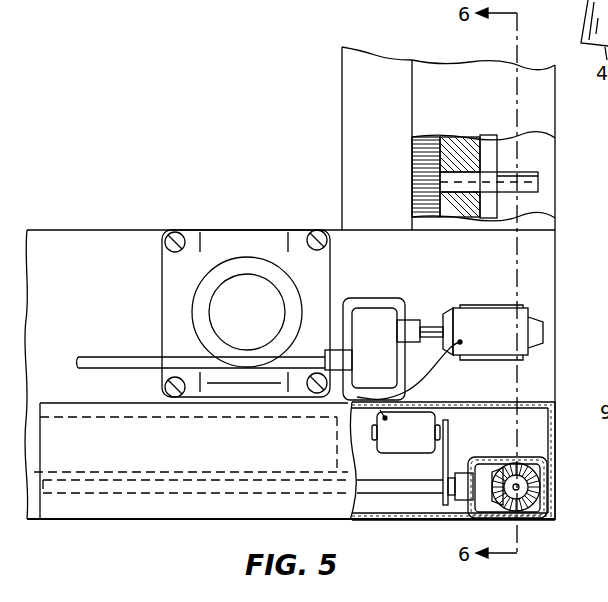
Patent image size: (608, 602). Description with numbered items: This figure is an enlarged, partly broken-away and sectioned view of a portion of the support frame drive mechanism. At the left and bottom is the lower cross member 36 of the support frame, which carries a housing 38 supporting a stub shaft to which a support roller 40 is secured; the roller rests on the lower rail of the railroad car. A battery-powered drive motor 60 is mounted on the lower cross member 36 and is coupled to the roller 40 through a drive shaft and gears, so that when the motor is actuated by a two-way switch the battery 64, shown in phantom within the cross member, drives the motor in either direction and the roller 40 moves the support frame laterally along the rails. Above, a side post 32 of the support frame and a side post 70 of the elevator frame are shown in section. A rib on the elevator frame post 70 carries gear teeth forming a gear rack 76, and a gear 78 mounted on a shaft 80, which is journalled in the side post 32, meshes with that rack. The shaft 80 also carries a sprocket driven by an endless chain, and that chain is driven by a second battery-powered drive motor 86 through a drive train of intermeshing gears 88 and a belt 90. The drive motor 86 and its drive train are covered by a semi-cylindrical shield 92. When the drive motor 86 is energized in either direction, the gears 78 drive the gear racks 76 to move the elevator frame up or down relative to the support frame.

The side post 32 is at (545, 121).
The lower cross member 36 is at (65, 237).
The housing 38 is at (248, 257).
The support roller 40 is at (210, 313).
The drive motor 60 is at (482, 320).
The battery 64 is at (120, 459).
The side post 70 is at (373, 67).
The gear rack 76 is at (428, 140).
The gear 78 is at (422, 180).
The shaft 80 is at (528, 177).
The drive motor 86 is at (403, 445).
The intermeshing gears 88 is at (533, 487).
The belt 90 is at (449, 458).
The semi-cylindrical shield 92 is at (192, 513).